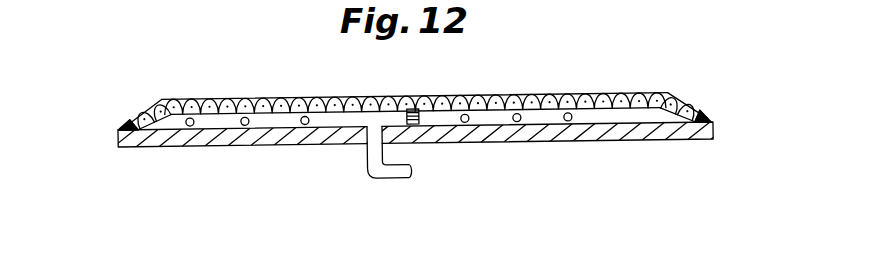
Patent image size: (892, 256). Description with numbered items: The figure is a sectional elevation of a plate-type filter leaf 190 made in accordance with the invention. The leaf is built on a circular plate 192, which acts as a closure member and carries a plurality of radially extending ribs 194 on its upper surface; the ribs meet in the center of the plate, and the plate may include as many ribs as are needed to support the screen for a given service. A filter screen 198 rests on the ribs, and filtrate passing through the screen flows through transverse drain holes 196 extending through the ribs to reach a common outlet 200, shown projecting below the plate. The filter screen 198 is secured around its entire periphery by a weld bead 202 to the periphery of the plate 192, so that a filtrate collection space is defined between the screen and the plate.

The plate-type filter leaf 190 is at (539, 147).
The circular plate 192 is at (212, 148).
The radially extending ribs 194 is at (282, 115).
The transverse drain holes 196 is at (192, 120).
The filter screen 198 is at (169, 100).
The common outlet 200 is at (378, 184).
The weld bead 202 is at (125, 125).